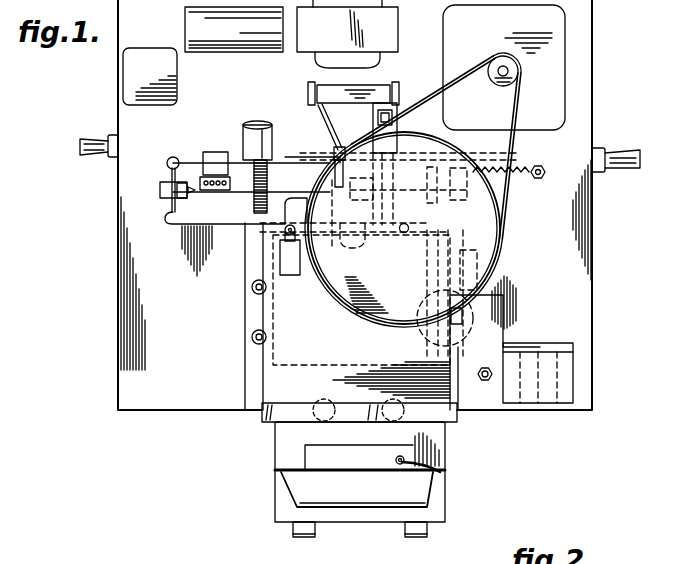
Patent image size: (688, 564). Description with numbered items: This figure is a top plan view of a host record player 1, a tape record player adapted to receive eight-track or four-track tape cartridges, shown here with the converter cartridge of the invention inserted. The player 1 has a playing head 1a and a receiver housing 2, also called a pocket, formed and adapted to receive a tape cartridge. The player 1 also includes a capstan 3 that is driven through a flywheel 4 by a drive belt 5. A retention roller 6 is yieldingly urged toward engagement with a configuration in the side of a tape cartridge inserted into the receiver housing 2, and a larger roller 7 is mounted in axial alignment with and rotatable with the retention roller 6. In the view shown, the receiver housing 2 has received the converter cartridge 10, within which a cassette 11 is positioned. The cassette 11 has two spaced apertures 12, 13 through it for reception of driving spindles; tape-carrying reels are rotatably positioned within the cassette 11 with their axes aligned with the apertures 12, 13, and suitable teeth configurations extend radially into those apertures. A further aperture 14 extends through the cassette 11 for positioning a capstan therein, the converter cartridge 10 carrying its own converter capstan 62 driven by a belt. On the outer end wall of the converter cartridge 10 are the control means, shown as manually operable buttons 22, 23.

The host record player 1 is at (600, 234).
The playing head 1a is at (388, 256).
The receiver housing 2 is at (245, 368).
The capstan 3 is at (403, 233).
The flywheel 4 is at (486, 209).
The drive belt 5 is at (436, 94).
The retention roller 6 is at (472, 316).
The larger roller 7 is at (462, 333).
The converter cartridge 10 is at (275, 495).
The cassette 11 is at (278, 449).
The aperture 12 is at (331, 423).
The aperture 13 is at (390, 423).
The aperture 14 is at (405, 460).
The manually operable button 22 is at (407, 539).
The manually operable button 23 is at (302, 540).
The converter capstan 62 is at (447, 477).